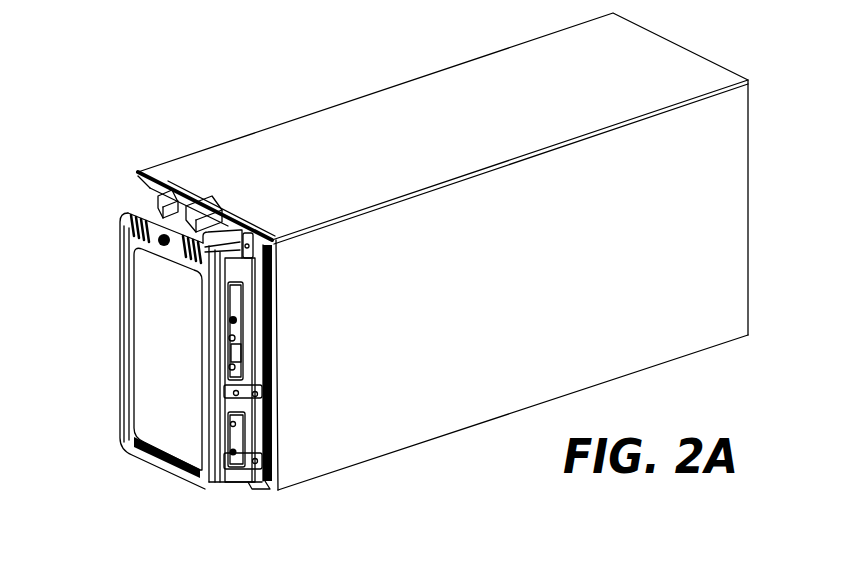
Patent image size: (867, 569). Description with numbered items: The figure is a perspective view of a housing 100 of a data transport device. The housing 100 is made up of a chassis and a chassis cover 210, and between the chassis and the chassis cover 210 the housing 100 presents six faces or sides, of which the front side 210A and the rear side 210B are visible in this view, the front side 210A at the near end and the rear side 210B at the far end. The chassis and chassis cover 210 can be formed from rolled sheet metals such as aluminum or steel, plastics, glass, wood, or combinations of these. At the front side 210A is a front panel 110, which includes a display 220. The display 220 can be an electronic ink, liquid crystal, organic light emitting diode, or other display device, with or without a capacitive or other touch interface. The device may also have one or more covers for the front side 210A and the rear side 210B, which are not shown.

The housing 100 is at (240, 66).
The front panel 110 is at (232, 478).
The chassis cover 210 is at (693, 345).
The front side 210A is at (122, 190).
The rear side 210B is at (762, 152).
The display 220 is at (155, 388).